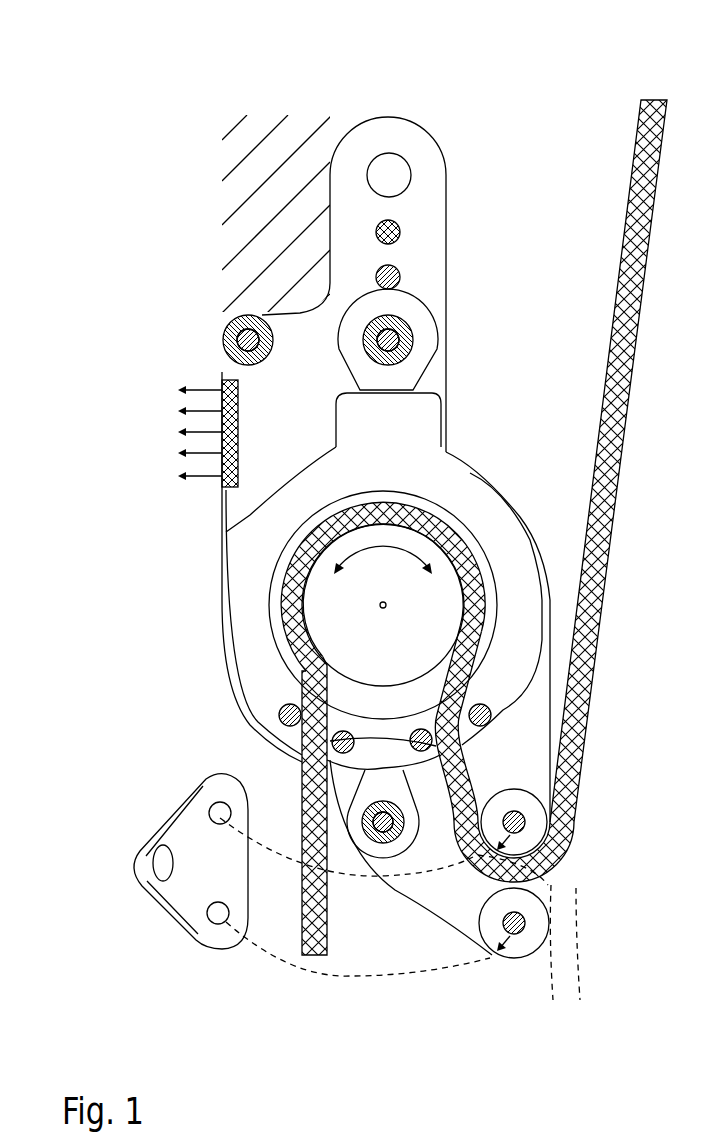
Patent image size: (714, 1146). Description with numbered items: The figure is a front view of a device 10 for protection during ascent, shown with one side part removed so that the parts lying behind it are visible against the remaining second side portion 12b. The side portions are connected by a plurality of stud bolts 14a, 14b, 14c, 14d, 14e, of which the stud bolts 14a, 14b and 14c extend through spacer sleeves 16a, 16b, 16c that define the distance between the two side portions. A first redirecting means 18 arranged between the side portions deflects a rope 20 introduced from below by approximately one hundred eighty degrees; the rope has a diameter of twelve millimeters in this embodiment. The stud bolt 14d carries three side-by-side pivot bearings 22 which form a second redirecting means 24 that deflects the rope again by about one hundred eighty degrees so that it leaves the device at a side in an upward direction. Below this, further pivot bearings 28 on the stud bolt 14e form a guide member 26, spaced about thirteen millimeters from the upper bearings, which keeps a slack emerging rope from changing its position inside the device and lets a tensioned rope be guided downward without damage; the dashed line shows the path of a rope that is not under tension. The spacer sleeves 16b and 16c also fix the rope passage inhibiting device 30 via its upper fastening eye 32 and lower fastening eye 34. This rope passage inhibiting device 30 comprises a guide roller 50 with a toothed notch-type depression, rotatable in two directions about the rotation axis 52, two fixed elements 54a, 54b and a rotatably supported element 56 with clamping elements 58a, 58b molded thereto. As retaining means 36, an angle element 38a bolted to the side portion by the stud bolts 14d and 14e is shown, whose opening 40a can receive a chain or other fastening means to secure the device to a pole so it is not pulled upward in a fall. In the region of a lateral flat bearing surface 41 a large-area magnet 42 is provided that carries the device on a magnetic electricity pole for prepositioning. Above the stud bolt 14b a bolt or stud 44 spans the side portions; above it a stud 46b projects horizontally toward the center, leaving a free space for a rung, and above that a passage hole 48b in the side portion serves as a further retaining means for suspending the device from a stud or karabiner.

The device 10 is at (480, 80).
The second side portion 12b is at (428, 235).
The stud bolt 14a is at (243, 333).
The stud bolt 14b is at (413, 343).
The stud bolt 14c is at (363, 818).
The stud bolt 14d is at (521, 822).
The stud bolt 14e is at (521, 923).
The spacer sleeve 16a is at (230, 348).
The spacer sleeve 16b is at (405, 328).
The spacer sleeve 16c is at (347, 847).
The first redirecting means 18 is at (343, 623).
The rope 20 is at (287, 650).
The pivot bearings 22 is at (533, 805).
The second redirecting means 24 is at (514, 822).
The guide member 26 is at (530, 903).
The pivot bearings 28 is at (514, 923).
The rope passage inhibiting device 30 is at (448, 490).
The upper fastening eye 32 is at (422, 368).
The lower fastening eye 34 is at (393, 850).
The retaining means 36 is at (234, 542).
The angle element 38a is at (183, 887).
The opening 40a is at (176, 862).
The lateral flat bearing surface 41 is at (220, 553).
The magnet 42 is at (234, 486).
The bolt or stud 44 is at (400, 277).
The stud 46b is at (399, 226).
The passage hole 48b is at (382, 169).
The guide roller 50 is at (422, 613).
The rotation axis 52 is at (390, 603).
The fixed element 54a is at (277, 715).
The fixed element 54b is at (491, 716).
The rotatably supported element 56 is at (470, 678).
The clamping element 58a is at (330, 741).
The clamping element 58b is at (440, 750).